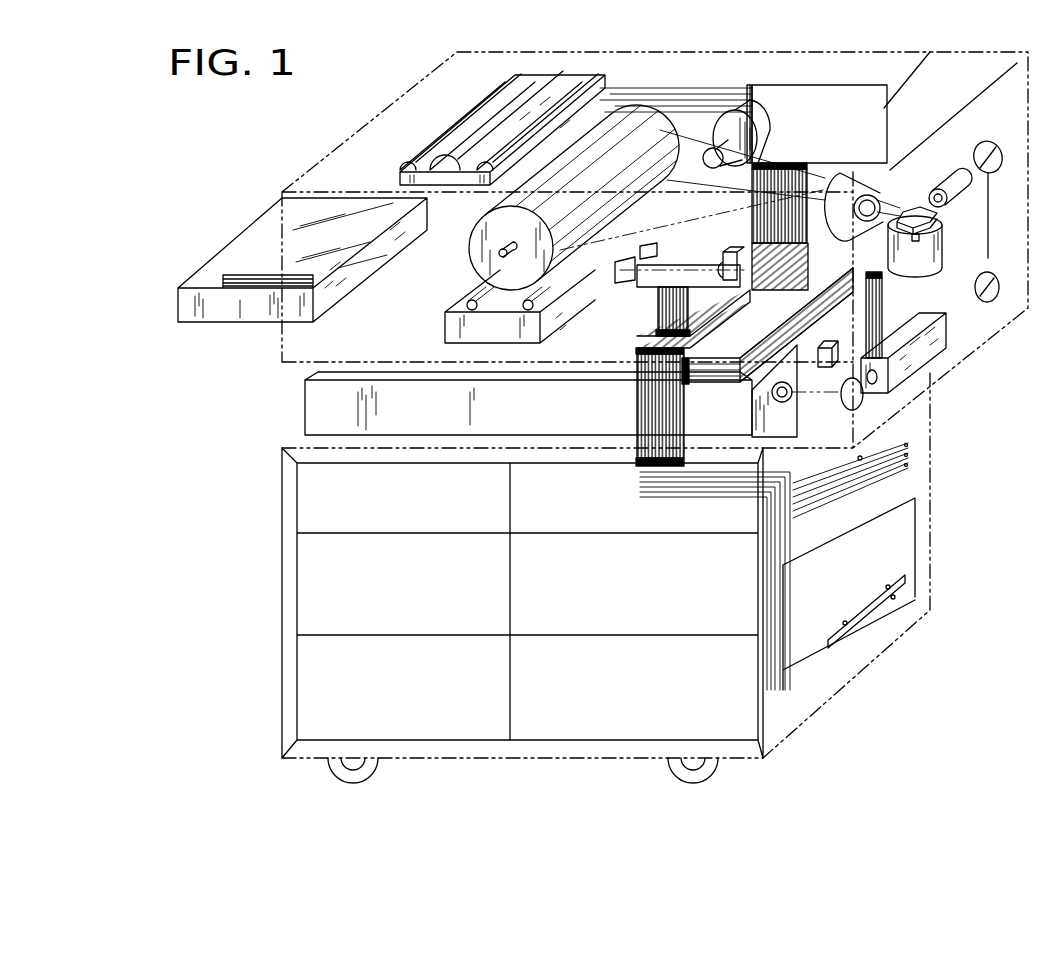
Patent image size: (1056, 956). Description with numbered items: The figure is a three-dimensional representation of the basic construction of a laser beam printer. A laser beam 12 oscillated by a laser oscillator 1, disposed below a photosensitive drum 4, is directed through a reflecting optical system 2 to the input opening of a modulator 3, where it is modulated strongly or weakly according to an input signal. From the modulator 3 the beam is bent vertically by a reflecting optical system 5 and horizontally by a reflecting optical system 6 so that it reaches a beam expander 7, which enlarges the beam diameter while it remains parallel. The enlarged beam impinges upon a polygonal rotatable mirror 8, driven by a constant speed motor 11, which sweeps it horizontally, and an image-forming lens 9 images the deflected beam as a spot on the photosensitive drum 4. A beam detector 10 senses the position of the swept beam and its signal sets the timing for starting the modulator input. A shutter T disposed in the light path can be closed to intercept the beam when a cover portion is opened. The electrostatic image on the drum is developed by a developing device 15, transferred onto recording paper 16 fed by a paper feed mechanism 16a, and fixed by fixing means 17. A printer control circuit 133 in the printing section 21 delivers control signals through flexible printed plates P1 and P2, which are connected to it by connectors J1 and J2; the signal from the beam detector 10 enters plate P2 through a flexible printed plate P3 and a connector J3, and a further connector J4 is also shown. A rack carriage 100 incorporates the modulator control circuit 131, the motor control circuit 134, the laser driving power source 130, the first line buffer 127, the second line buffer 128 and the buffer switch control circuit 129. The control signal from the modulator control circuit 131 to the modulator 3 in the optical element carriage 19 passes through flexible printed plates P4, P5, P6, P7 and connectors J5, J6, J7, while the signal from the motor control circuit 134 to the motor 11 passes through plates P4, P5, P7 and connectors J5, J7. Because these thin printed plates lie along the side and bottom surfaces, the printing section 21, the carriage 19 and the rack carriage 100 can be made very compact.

The laser oscillator 1 is at (742, 408).
The reflecting optical system 2 is at (850, 406).
The modulator 3 is at (940, 336).
The photosensitive drum 4 is at (637, 125).
The reflecting optical system 5 is at (1000, 290).
The reflecting optical system 6 is at (988, 142).
The beam expander 7 is at (957, 187).
The polygonal rotatable mirror 8 is at (944, 214).
The image-forming lens 9 is at (858, 181).
The beam detector 10 is at (718, 263).
The motor 11 is at (950, 250).
The laser beam 12 is at (688, 223).
The developing device 15 is at (447, 328).
The recording paper 16 is at (262, 258).
The paper feed mechanism 16a is at (232, 310).
The fixing means 17 is at (548, 90).
The optical element carriage 19 is at (283, 407).
The printing section 21 is at (393, 97).
The rack carriage 100 is at (282, 726).
The first line buffer 127 is at (310, 504).
The second line buffer 128 is at (314, 597).
The buffer switch control circuit 129 is at (312, 690).
The laser driving power source 130 is at (752, 697).
The modulator control circuit 131 is at (752, 518).
The printer control circuit 133 is at (866, 84).
The motor control circuit 134 is at (752, 585).
The flexible printed plate P1 is at (718, 90).
The flexible printed plate P2 is at (795, 250).
The flexible printed plate P3 is at (657, 300).
The flexible printed plate P4 is at (636, 406).
The flexible printed plate P5 is at (820, 300).
The flexible printed plate P6 is at (886, 322).
The flexible printed plate P7 is at (852, 507).
The connector J1 is at (752, 84).
The connector J2 is at (770, 162).
The connector J3 is at (655, 338).
The connector J4 is at (636, 355).
The connector J5 is at (689, 385).
The connector J6 is at (880, 276).
The connector J7 is at (636, 462).
The shutter T is at (838, 372).